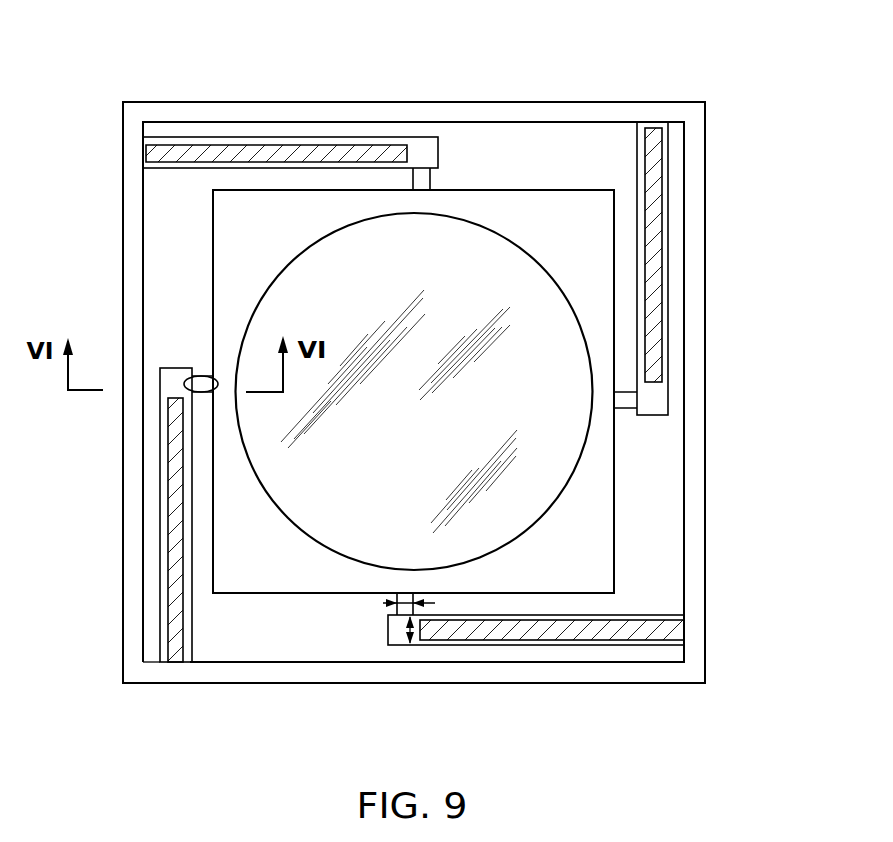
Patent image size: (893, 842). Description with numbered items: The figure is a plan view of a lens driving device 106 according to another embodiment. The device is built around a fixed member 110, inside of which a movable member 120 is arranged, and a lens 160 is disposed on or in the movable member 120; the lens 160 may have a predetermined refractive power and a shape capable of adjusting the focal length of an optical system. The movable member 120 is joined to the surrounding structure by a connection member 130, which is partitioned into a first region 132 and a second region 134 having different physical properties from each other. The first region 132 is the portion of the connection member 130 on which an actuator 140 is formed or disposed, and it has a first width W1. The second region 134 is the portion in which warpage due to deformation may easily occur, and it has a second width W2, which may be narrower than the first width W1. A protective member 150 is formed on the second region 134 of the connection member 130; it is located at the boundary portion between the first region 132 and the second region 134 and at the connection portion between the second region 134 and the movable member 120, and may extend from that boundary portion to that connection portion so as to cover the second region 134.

The lens driving device 106 is at (626, 81).
The fixed member 110 is at (694, 447).
The movable member 120 is at (598, 505).
The connection member 130 is at (512, 634).
The first region 132 is at (170, 526).
The second region 134 is at (203, 376).
The actuator 140 is at (610, 628).
The protective member 150 is at (204, 389).
The lens 160 is at (340, 525).
The first width W1 is at (405, 629).
The second width W2 is at (398, 614).